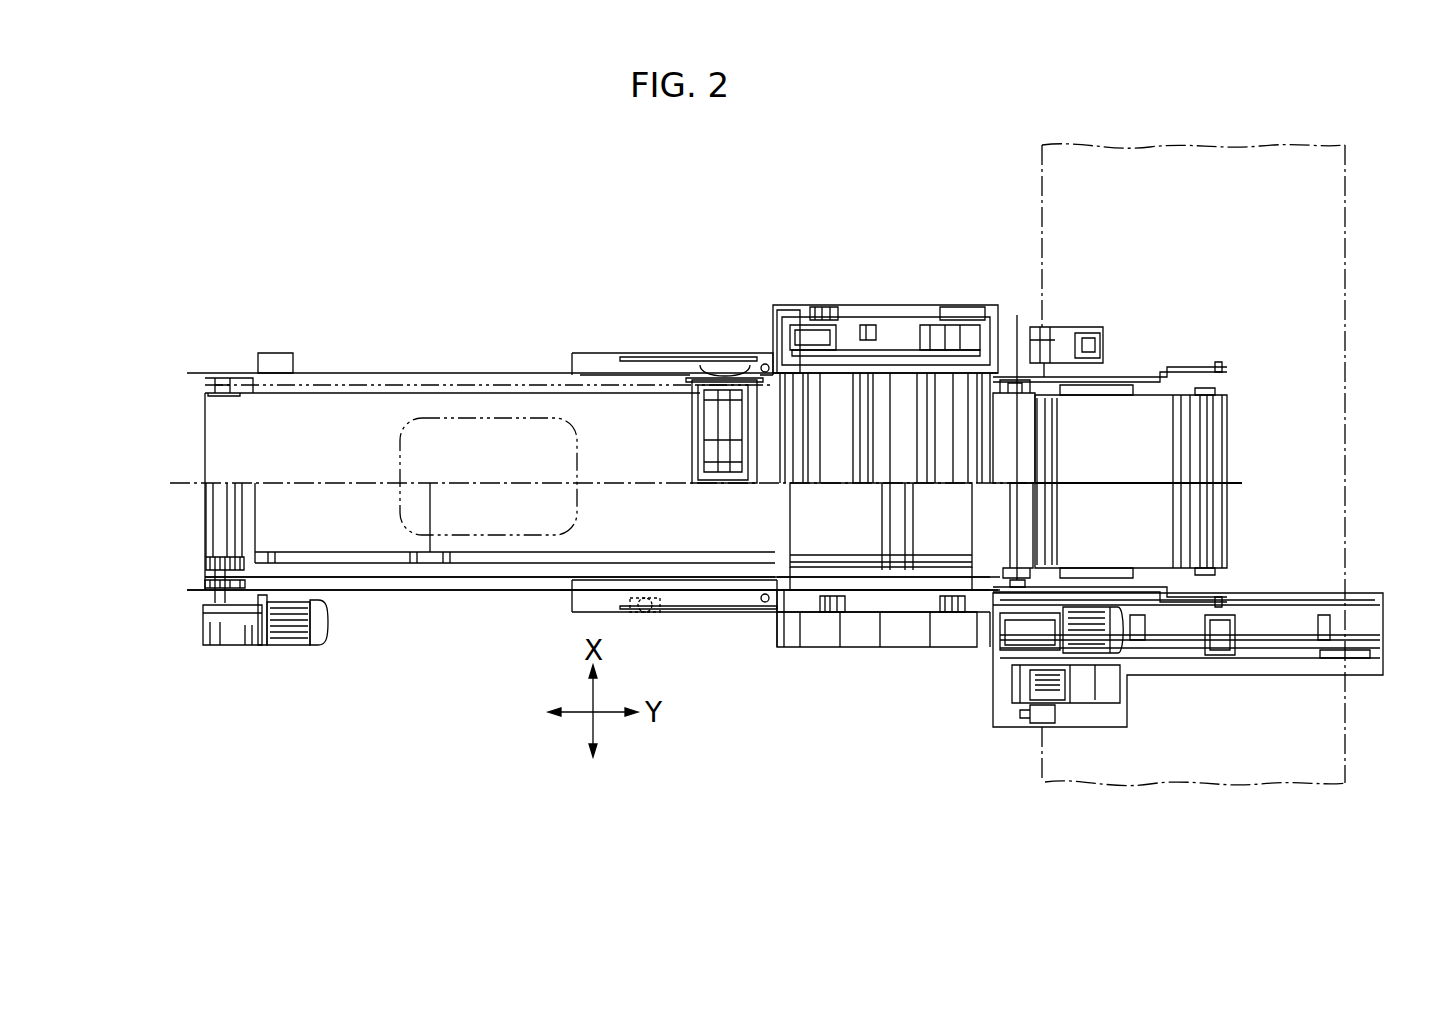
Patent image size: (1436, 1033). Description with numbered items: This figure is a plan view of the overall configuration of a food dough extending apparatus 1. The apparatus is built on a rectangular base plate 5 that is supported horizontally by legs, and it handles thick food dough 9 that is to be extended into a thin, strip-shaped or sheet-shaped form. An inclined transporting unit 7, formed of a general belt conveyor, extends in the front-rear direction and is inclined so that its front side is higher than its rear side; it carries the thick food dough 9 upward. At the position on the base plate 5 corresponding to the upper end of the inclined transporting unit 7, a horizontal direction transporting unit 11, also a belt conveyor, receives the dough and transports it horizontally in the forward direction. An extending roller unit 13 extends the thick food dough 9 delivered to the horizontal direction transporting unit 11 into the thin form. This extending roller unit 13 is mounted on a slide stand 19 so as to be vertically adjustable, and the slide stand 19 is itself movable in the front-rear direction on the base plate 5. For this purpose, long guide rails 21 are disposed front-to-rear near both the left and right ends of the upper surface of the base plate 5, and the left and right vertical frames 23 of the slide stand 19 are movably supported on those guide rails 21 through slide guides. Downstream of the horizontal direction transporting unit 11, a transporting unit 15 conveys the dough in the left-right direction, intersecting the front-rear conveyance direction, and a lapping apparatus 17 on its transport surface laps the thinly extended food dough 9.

The food dough extending apparatus 1 is at (847, 249).
The base plate 5 is at (577, 603).
The inclined transporting unit 7 is at (508, 371).
The food dough 9 is at (433, 418).
The horizontal direction transporting unit 11 is at (1016, 408).
The extending roller unit 13 is at (913, 315).
The transporting unit 15 is at (1345, 258).
The lapping apparatus 17 is at (1138, 363).
The slide stand 19 is at (777, 650).
The guide rails 21 is at (688, 353).
The vertical frames 23 is at (777, 323).